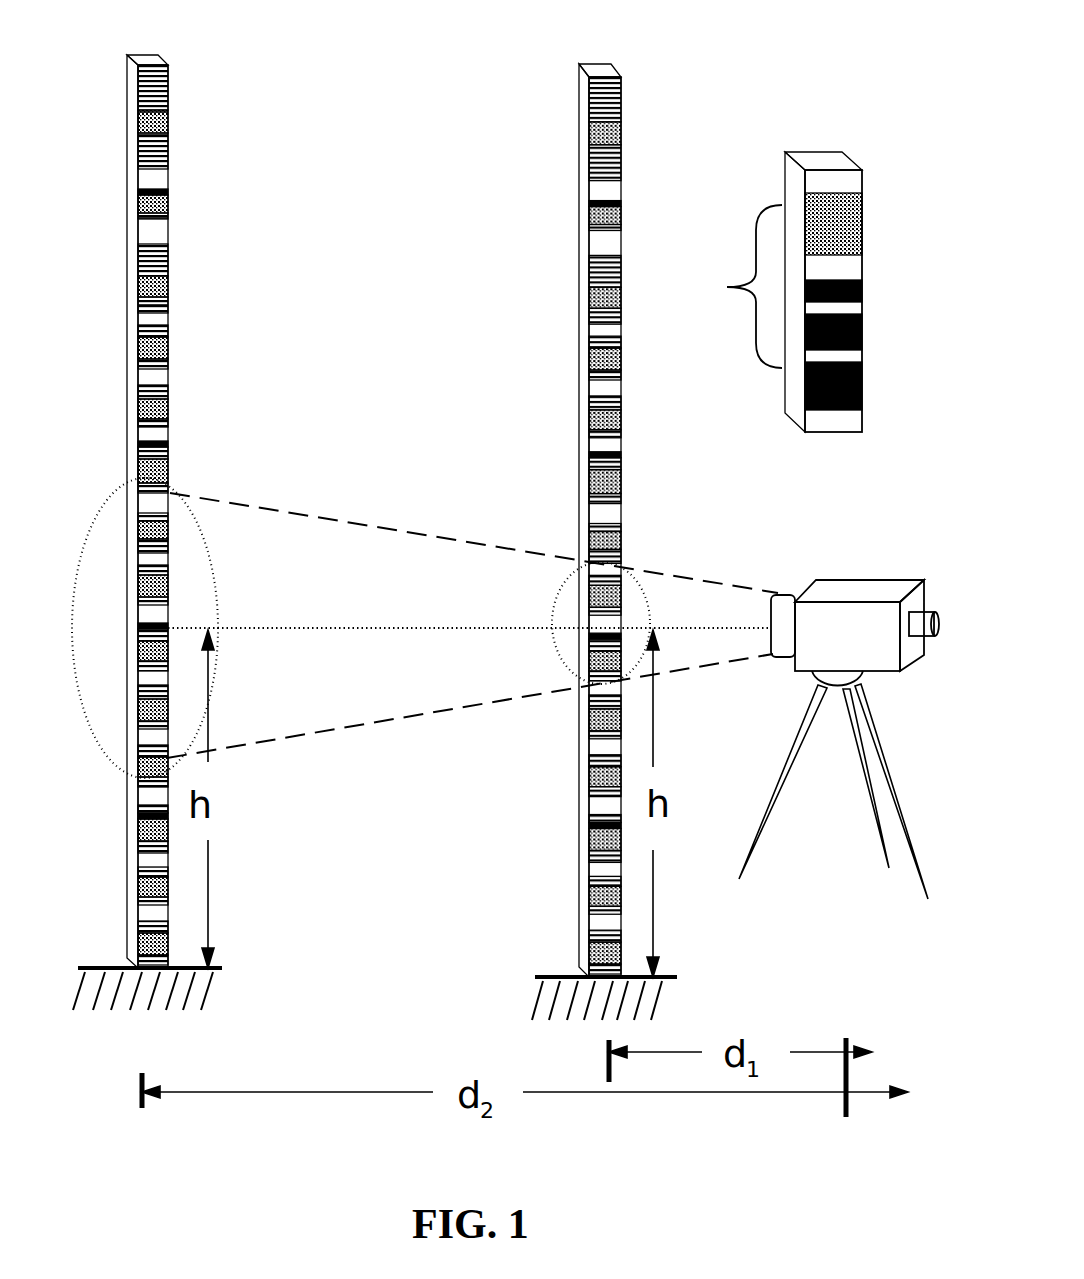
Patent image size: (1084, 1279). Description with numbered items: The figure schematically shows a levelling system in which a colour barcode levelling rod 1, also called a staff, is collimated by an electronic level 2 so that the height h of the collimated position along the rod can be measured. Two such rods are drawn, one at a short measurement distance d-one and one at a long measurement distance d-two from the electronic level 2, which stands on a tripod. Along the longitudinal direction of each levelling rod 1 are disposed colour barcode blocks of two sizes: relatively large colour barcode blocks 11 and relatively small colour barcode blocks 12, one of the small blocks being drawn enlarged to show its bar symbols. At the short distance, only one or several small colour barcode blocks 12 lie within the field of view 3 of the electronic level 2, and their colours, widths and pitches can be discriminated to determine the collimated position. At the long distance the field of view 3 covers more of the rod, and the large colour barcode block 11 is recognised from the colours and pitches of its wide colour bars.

The levelling rod 1 is at (163, 60).
The large colour barcode block 11 is at (168, 218).
The small colour barcode block 12 is at (827, 180).
The electronic level 2 is at (883, 580).
The field of view 3 is at (172, 490).